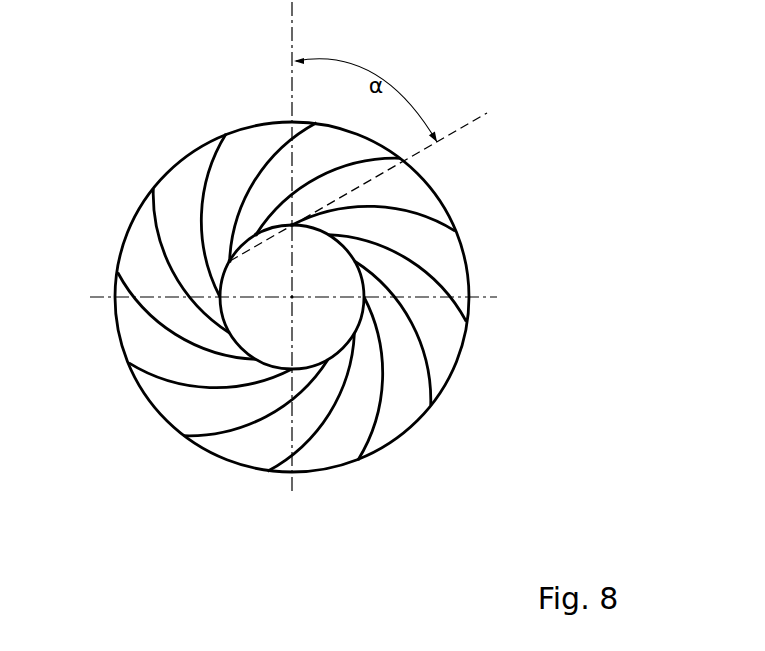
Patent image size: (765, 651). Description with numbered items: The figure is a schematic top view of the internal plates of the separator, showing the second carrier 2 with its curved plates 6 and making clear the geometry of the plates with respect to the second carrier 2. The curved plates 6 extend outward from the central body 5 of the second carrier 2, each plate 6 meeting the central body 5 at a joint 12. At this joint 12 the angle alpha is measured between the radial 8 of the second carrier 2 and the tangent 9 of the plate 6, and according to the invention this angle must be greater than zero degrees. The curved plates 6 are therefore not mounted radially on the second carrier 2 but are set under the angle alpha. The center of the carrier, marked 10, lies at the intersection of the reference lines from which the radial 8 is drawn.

The second carrier 2 is at (160, 154).
The central body 5 is at (323, 372).
The curved plates 6 is at (445, 295).
The radial 8 is at (290, 12).
The tangent 9 is at (477, 123).
The center of rotation 10 is at (290, 296).
The joint 12 is at (255, 236).